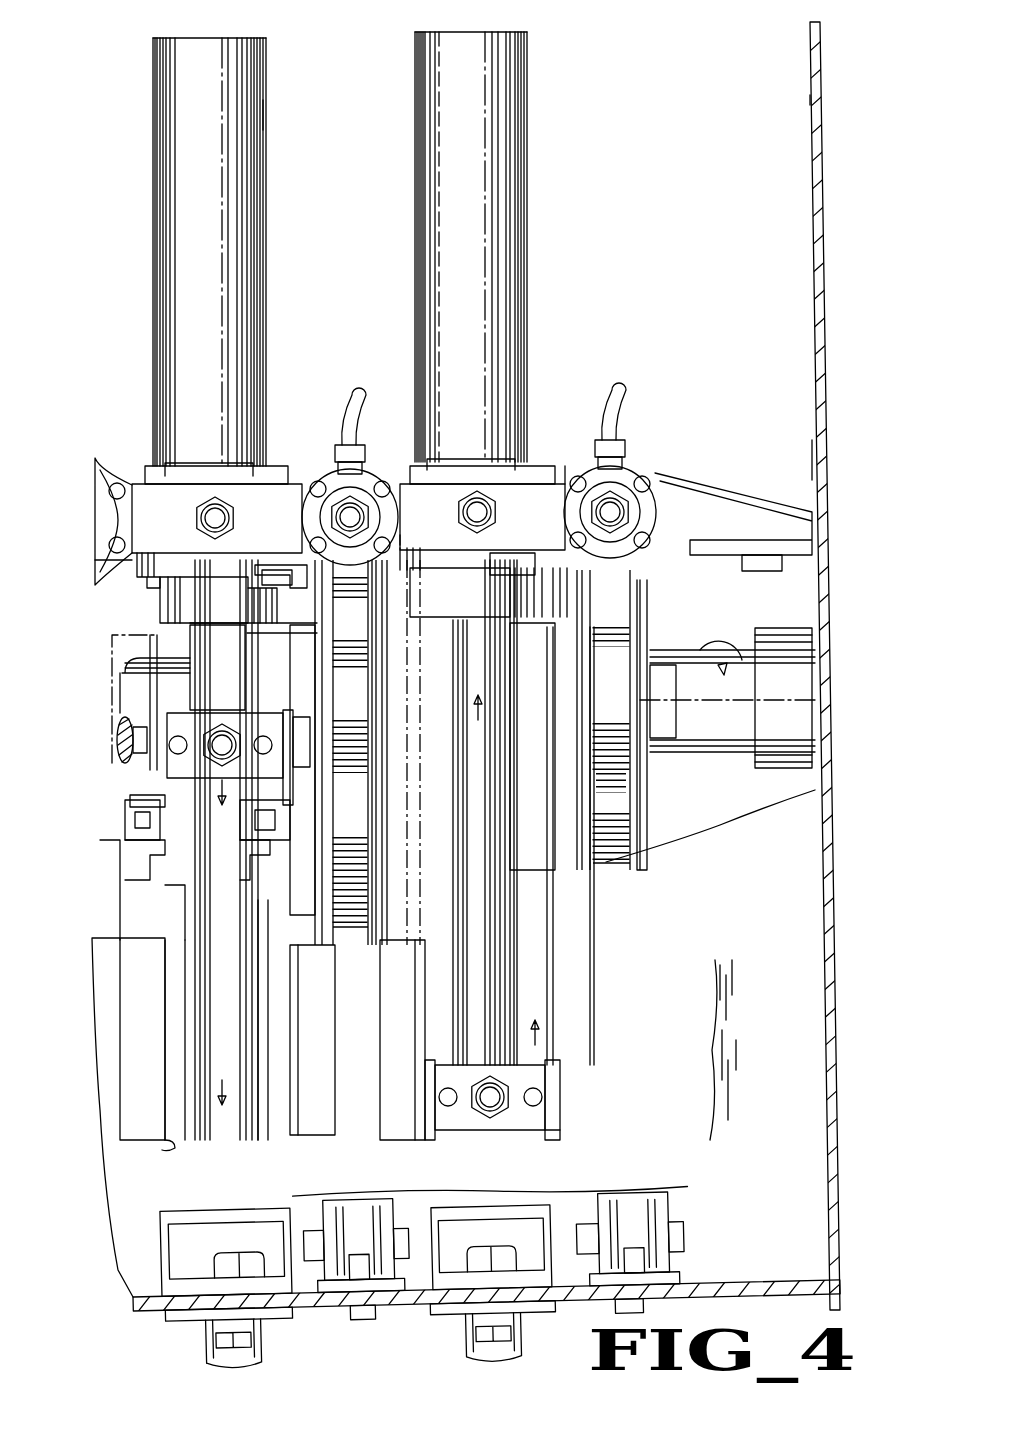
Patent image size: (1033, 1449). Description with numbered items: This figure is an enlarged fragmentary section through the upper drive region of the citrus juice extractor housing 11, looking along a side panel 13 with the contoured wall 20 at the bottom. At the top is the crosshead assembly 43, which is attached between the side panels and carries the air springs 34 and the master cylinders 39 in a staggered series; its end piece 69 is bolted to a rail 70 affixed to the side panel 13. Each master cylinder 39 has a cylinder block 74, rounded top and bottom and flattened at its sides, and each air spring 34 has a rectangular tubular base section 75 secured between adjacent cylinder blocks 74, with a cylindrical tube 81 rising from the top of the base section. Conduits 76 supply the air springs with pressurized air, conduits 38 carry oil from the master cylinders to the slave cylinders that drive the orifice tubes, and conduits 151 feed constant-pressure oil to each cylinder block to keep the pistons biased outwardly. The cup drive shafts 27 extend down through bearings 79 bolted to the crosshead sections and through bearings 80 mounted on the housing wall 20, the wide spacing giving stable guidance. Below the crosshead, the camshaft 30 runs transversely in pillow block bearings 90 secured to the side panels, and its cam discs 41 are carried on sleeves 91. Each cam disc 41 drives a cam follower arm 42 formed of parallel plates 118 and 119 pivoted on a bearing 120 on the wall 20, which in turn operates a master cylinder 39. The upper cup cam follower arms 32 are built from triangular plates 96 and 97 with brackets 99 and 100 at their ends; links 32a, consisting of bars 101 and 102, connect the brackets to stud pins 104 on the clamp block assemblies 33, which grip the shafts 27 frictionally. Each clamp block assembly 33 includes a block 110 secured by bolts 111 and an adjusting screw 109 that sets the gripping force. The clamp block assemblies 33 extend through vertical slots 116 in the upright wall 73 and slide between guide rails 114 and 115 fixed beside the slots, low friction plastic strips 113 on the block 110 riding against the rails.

The housing 11 is at (820, 50).
The side panel 13 is at (810, 98).
The contoured wall 20 is at (133, 1301).
The cup drive shaft 27 is at (225, 1138).
The cam shaft 30 is at (122, 673).
The cam follower arm 32 is at (180, 883).
The link 32a is at (130, 853).
The clamp block assembly 33 is at (167, 720).
The air spring 34 is at (412, 55).
The conduit 38 is at (100, 519).
The master cylinder 39 is at (110, 473).
The cam disc 41 is at (355, 928).
The cam follower arm 42 is at (285, 566).
The crosshead assembly 43 is at (563, 460).
The end piece 69 is at (740, 516).
The rail 70 is at (810, 453).
The upright wall 73 is at (762, 954).
The cylinder block 74 is at (95, 558).
The tubular base section 75 is at (176, 522).
The conduit 76 is at (236, 518).
The bearing 79 is at (165, 603).
The bearing 80 is at (245, 1254).
The cylindrical tube 81 is at (418, 109).
The pillow block bearing 90 is at (770, 628).
The sleeve 91 is at (282, 674).
The triangular plate 96 is at (190, 910).
The triangular plate 97 is at (260, 903).
The bracket 99 is at (125, 845).
The bracket 100 is at (255, 850).
The bar 101 is at (130, 800).
The bar 102 is at (270, 828).
The stud pin 104 is at (118, 741).
The adjusting screw 109 is at (222, 722).
The block 110 is at (150, 763).
The bolt 111 is at (178, 735).
The strip 113 is at (155, 780).
The guide rail 114 is at (120, 1063).
The guide rail 115 is at (310, 1133).
The vertical slot 116 is at (170, 1148).
The plate 118 is at (275, 603).
The plate 119 is at (400, 594).
The bearing 120 is at (358, 1213).
The conduit 151 is at (350, 390).